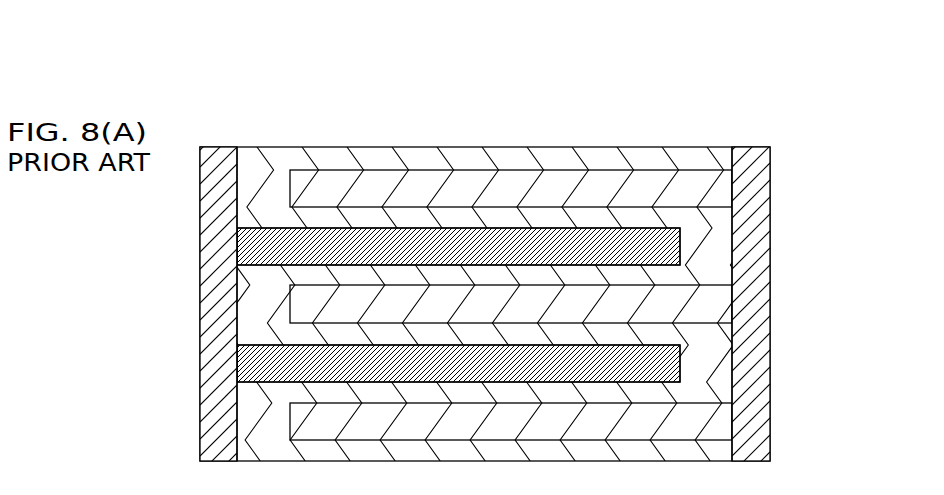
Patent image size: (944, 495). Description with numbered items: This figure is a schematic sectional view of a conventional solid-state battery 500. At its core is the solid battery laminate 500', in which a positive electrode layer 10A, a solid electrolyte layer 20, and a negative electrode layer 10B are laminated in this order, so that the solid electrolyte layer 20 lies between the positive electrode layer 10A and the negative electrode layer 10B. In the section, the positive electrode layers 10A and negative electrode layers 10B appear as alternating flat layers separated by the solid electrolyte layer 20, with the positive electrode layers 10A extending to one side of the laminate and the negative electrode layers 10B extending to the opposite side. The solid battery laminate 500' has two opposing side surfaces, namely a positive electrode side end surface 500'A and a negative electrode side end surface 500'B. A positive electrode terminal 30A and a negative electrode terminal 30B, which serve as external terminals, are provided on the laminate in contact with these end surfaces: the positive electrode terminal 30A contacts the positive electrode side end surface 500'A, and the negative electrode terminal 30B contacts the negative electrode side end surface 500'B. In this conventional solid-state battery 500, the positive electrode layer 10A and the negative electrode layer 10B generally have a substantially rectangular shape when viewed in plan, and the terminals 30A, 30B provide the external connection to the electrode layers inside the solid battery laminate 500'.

The solid-state battery 500 is at (480, 253).
The solid battery laminate 500' is at (462, 273).
The positive electrode side end surface 500'A is at (156, 304).
The negative electrode side end surface 500'B is at (808, 304).
The positive electrode layer 10A is at (247, 246).
The negative electrode layer 10B is at (717, 300).
The solid electrolyte layer 20 is at (733, 144).
The positive electrode terminal 30A is at (207, 439).
The negative electrode terminal 30B is at (758, 434).